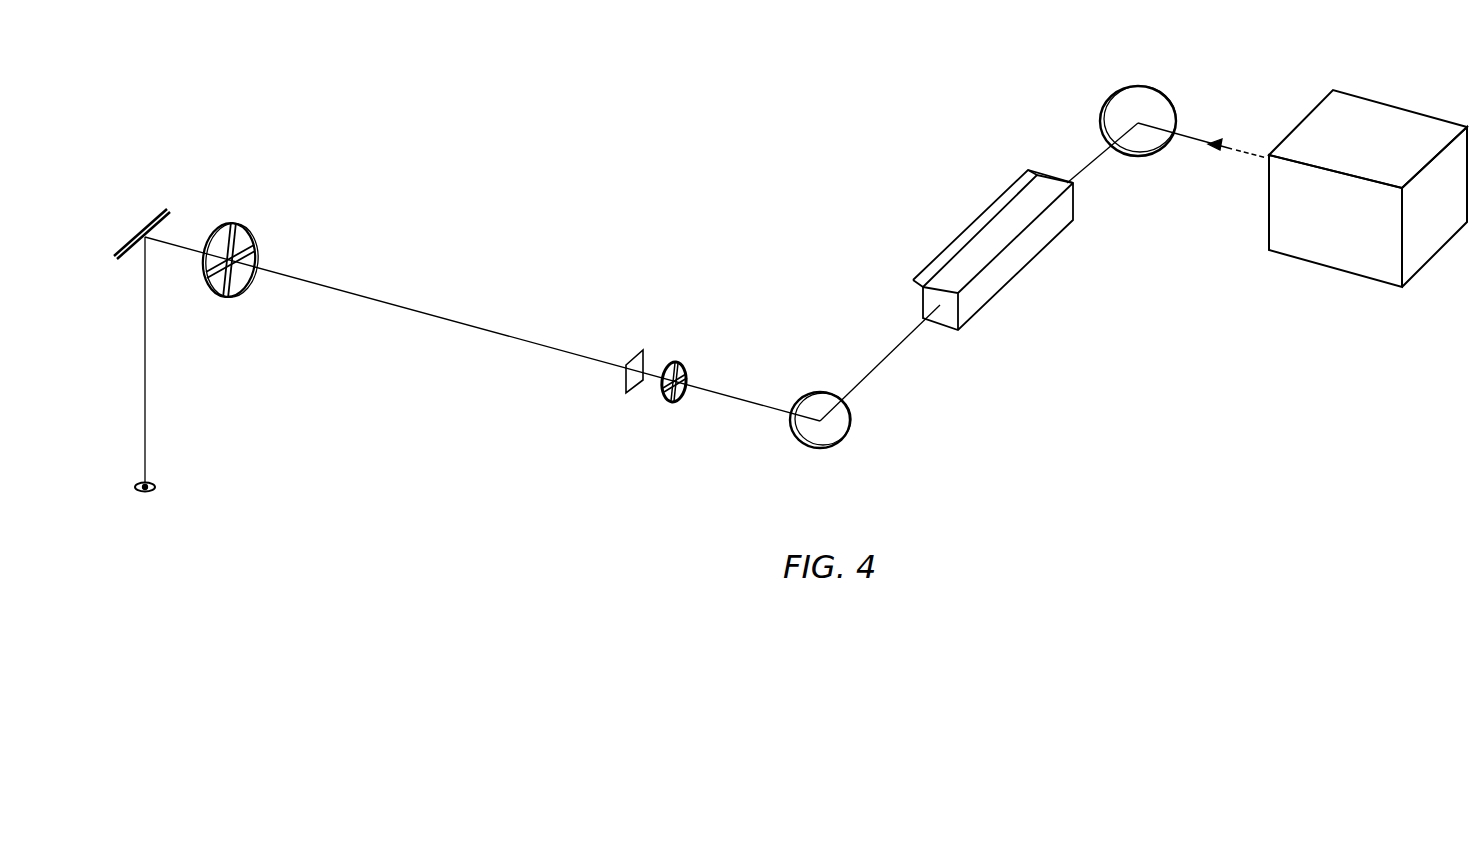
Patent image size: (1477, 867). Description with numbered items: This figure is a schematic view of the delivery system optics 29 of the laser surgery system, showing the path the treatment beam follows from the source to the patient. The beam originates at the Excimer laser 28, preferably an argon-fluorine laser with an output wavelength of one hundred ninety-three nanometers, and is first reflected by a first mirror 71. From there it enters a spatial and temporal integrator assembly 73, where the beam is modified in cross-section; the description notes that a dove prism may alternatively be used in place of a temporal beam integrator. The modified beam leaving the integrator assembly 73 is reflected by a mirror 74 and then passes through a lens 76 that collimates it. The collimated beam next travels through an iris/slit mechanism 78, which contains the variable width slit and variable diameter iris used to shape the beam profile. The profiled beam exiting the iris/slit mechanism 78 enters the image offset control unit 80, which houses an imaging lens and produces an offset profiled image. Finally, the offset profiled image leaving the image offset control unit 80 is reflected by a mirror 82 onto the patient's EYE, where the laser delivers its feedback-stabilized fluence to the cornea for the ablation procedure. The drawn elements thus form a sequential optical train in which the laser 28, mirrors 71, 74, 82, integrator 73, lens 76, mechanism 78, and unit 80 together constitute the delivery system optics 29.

The Excimer laser 28 is at (1323, 113).
The delivery system optics 29 is at (1218, 376).
The first mirror 71 is at (1133, 88).
The spatial and temporal integrator assembly 73 is at (1003, 288).
The mirror 74 is at (826, 449).
The lens 76 is at (678, 362).
The iris/slit mechanism 78 is at (635, 355).
The image offset control unit 80 is at (230, 298).
The mirror 82 is at (142, 218).
The patient's eye EYE is at (156, 486).